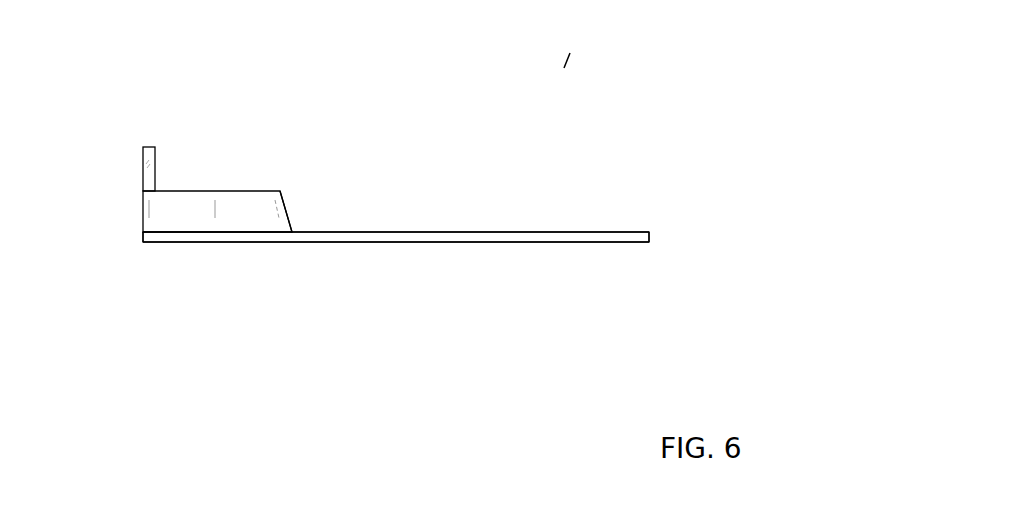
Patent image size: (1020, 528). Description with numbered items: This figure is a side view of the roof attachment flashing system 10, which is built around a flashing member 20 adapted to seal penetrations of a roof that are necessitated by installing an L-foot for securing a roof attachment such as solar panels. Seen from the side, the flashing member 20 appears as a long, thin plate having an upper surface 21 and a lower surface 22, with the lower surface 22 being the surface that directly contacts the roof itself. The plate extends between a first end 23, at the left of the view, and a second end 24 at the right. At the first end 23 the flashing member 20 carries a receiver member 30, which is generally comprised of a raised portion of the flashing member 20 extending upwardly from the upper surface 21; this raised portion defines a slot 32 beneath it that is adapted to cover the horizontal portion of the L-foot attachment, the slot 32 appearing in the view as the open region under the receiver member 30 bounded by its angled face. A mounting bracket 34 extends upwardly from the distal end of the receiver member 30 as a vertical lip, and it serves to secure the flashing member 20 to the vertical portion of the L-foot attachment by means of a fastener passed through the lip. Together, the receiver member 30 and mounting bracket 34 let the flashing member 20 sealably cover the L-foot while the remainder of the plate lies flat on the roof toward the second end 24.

The roof attachment flashing system 10 is at (564, 68).
The flashing member 20 is at (590, 232).
The upper surface 21 is at (497, 231).
The lower surface 22 is at (462, 242).
The first end 23 is at (143, 237).
The second end 24 is at (649, 238).
The receiver member 30 is at (232, 190).
The slot 32 is at (245, 212).
The mounting bracket 34 is at (155, 155).